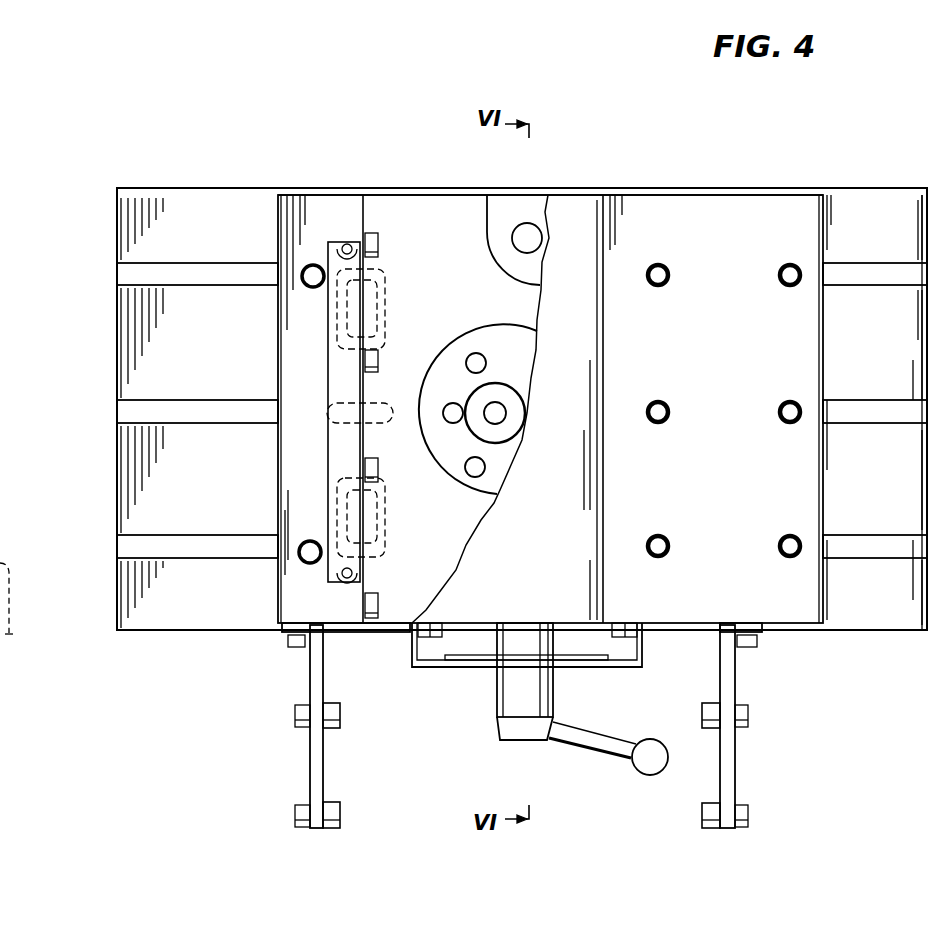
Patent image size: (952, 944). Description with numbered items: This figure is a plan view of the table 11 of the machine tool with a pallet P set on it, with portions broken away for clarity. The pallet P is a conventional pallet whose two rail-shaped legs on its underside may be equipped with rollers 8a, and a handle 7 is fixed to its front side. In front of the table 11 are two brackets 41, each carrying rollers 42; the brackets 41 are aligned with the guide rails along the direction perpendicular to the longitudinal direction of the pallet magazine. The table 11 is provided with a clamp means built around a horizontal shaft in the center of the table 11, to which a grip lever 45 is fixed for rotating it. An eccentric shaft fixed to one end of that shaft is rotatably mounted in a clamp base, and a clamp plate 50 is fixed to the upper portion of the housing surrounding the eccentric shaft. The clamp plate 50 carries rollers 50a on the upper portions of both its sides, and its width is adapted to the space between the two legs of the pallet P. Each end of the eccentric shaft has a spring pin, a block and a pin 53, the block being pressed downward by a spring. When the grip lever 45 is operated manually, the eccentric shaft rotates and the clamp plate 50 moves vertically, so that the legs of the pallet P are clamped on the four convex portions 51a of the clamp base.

The table 11 is at (200, 617).
The clamp plate 50 is at (428, 202).
The rollers 8a is at (348, 238).
The rollers 50a is at (370, 235).
The convex portions 51a is at (370, 312).
The pin 53 is at (530, 230).
The pallet P is at (710, 208).
The handle 7 is at (627, 667).
The grip lever 45 is at (647, 763).
The brackets 41 is at (320, 758).
The rollers 42 is at (337, 715).